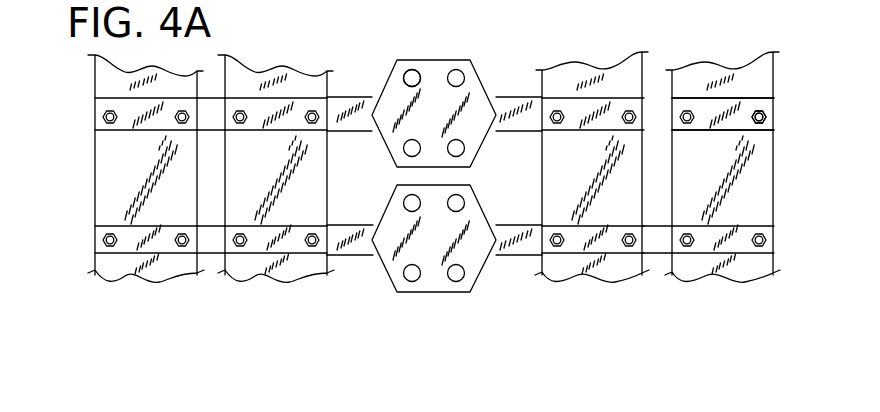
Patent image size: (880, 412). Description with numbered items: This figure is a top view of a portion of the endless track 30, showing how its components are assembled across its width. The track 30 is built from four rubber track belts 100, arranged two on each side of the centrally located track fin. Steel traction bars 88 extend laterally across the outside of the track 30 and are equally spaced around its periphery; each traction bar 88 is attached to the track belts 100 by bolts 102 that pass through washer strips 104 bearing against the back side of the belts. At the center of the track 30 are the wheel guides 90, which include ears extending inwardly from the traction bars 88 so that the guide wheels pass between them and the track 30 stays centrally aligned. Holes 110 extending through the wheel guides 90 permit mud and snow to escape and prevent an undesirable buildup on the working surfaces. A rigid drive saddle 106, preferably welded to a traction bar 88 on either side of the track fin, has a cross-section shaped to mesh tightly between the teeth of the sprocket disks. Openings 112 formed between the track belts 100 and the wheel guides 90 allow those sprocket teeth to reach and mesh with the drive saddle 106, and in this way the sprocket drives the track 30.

The track 30 is at (116, 281).
The traction bar 88 is at (653, 243).
The wheel guide 90 is at (475, 97).
The track belt 100 is at (132, 78).
The bolt 102 is at (767, 115).
The washer strip 104 is at (723, 110).
The drive saddle 106 is at (515, 112).
The hole 110 is at (410, 78).
The opening 112 is at (502, 183).